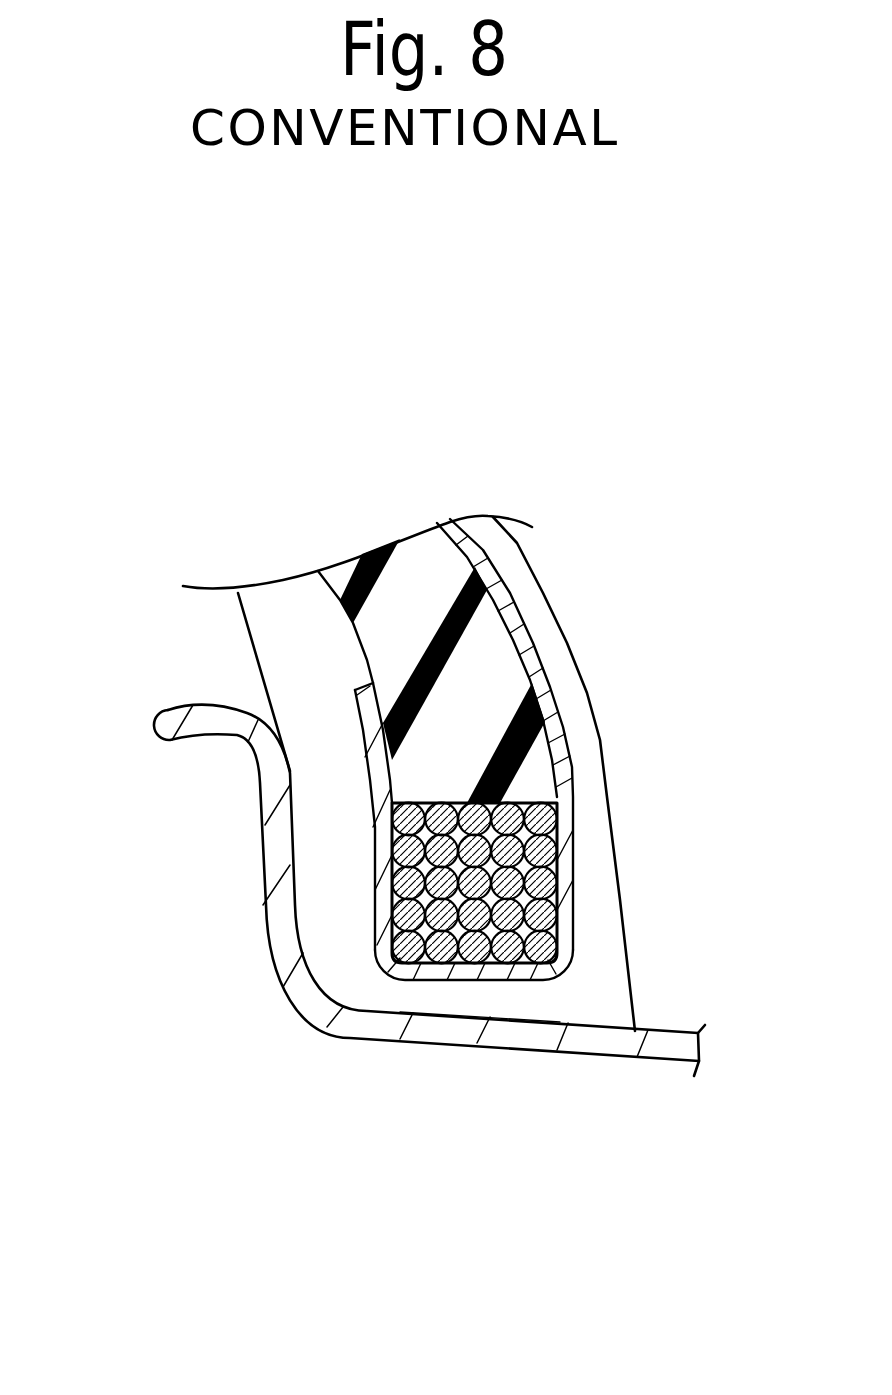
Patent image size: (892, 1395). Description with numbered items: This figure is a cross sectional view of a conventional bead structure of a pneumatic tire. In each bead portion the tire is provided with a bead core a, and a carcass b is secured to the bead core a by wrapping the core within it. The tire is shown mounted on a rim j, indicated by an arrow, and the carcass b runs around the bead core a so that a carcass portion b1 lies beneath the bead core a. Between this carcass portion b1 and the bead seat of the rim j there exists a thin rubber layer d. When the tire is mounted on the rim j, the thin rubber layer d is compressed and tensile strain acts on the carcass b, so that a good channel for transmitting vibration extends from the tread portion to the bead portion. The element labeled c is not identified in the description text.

The rim j is at (228, 838).
The carcass b is at (533, 663).
The carcass portion b1 is at (523, 980).
The bead core a is at (392, 915).
The outer lip c is at (667, 1033).
The thin rubber layer d is at (475, 1000).